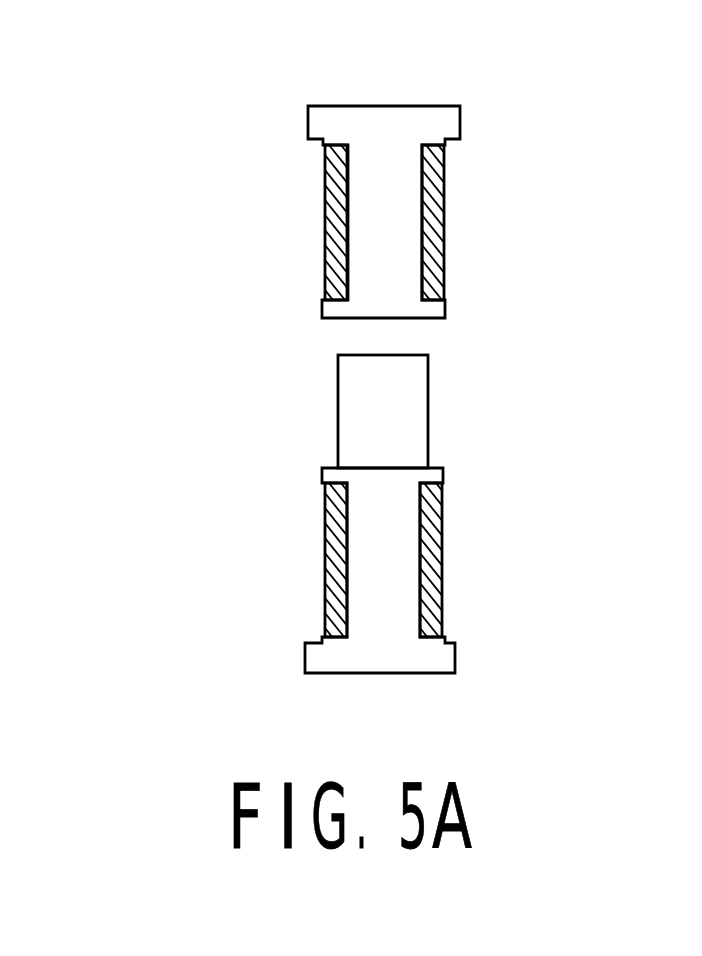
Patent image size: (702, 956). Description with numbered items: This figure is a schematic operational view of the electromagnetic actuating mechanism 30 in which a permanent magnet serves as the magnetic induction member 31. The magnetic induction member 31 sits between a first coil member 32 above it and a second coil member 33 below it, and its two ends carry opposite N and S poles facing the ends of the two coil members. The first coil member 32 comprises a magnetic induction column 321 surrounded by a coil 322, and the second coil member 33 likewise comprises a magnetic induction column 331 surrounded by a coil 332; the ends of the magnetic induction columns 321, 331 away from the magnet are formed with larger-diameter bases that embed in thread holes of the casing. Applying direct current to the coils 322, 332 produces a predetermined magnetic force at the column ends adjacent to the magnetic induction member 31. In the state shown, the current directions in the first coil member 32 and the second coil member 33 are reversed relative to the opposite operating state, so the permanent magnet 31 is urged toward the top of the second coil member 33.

The electromagnetic actuating mechanism 30 is at (242, 118).
The magnetic induction member 31 is at (420, 375).
The first coil member 32 is at (594, 84).
The magnetic induction column 321 is at (450, 123).
The coil 322 is at (443, 195).
The second coil member 33 is at (589, 504).
The magnetic induction column 331 is at (392, 568).
The coil 332 is at (433, 607).